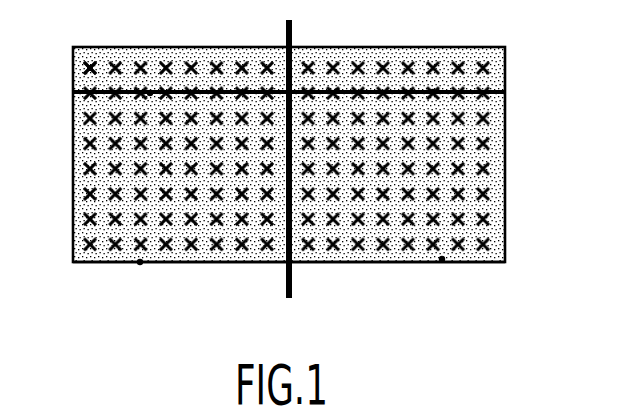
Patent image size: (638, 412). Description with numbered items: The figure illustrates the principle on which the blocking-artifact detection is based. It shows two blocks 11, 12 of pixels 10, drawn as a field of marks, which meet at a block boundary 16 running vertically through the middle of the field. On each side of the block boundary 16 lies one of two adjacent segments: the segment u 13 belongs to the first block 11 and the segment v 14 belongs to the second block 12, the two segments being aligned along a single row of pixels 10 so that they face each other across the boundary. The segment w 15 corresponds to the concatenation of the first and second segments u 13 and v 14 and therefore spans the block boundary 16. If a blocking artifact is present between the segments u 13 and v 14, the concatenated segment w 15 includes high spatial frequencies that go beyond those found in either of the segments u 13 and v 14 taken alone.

The pixels 10 is at (91, 65).
The first block 11 is at (140, 263).
The second block 12 is at (442, 260).
The segment u 13 is at (150, 94).
The segment v 14 is at (433, 94).
The segment w 15 is at (243, 91).
The block boundary 16 is at (293, 283).